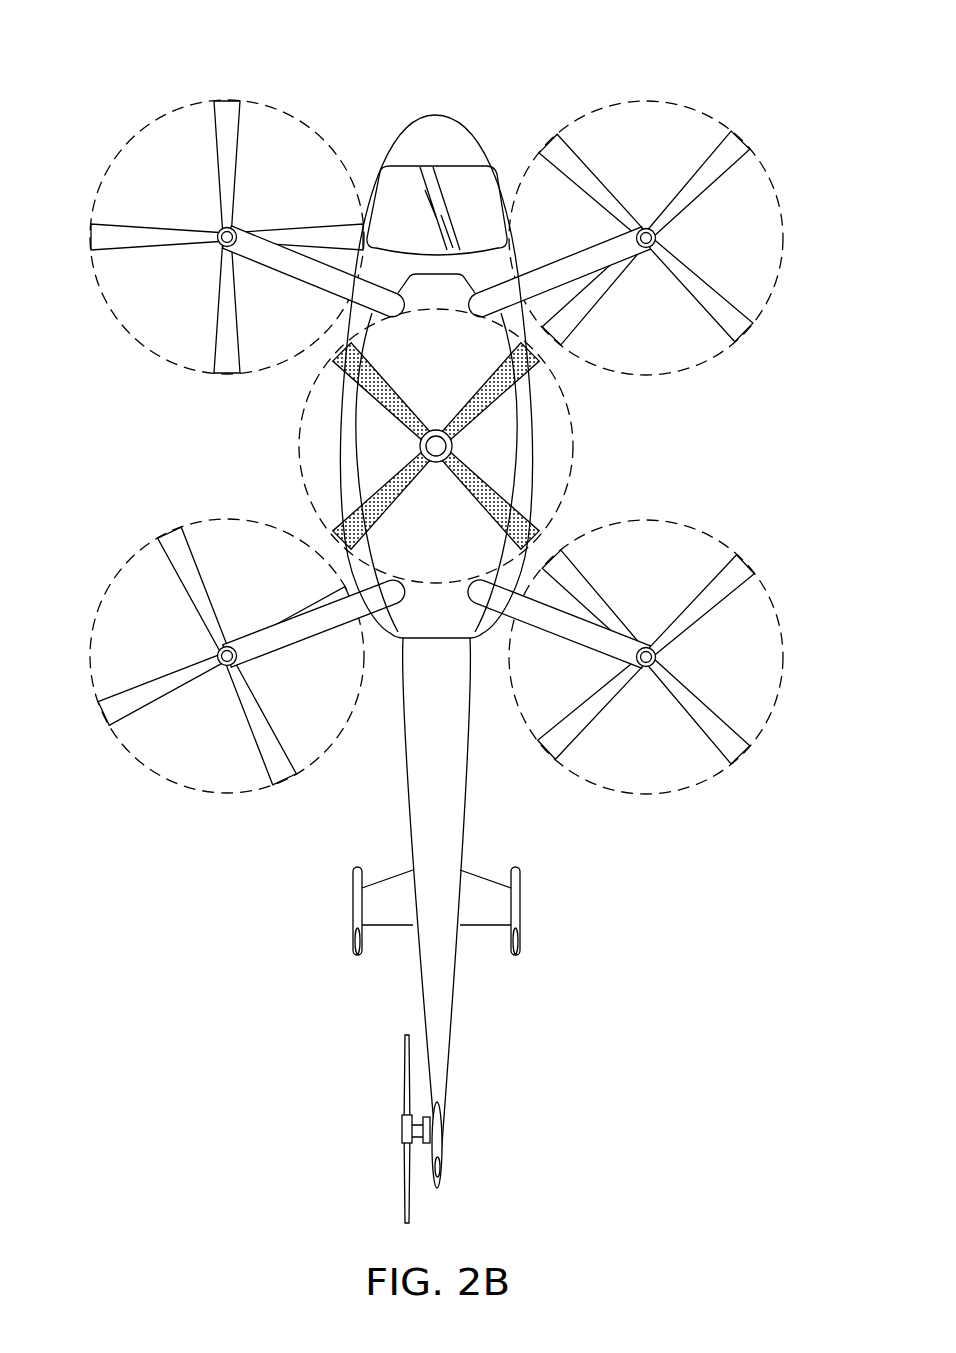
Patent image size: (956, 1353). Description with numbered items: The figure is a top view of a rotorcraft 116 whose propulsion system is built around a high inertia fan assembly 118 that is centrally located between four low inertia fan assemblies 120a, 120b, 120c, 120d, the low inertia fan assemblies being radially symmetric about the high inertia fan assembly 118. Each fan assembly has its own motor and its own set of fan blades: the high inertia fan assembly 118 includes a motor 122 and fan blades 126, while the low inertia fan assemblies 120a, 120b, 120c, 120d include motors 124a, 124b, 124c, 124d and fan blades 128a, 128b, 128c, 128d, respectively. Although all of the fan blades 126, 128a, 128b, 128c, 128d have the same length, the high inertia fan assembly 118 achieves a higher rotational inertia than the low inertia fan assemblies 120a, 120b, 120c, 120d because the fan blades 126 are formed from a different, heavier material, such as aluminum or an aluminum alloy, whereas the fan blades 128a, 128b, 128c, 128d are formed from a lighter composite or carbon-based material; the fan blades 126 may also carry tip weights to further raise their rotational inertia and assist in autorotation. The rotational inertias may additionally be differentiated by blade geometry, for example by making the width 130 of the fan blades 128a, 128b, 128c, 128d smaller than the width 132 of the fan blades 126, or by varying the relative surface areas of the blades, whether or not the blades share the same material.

The rotorcraft 116 is at (134, 80).
The high inertia fan assembly 118 is at (340, 518).
The low inertia fan assembly 120a is at (214, 202).
The low inertia fan assembly 120b is at (181, 727).
The low inertia fan assembly 120c is at (695, 727).
The low inertia fan assembly 120d is at (708, 137).
The motor 122 is at (420, 447).
The motor 124a is at (219, 247).
The motor 124b is at (222, 648).
The motor 124c is at (661, 657).
The motor 124d is at (642, 226).
The fan blades 126 is at (495, 500).
The fan blades 128a is at (212, 352).
The fan blades 128b is at (200, 737).
The fan blades 128c is at (575, 752).
The fan blades 128d is at (712, 292).
The width 130 is at (753, 628).
The width 132 is at (543, 413).